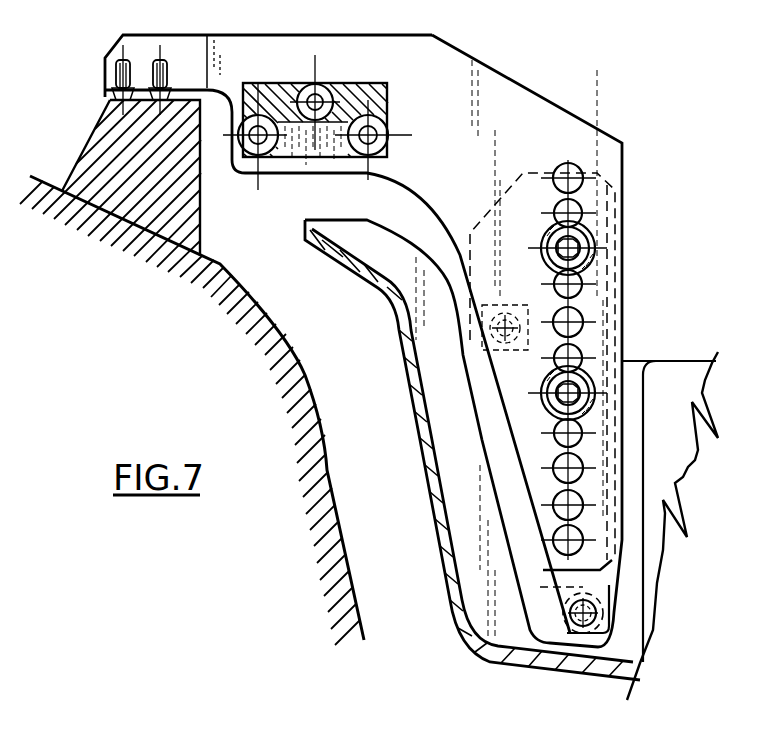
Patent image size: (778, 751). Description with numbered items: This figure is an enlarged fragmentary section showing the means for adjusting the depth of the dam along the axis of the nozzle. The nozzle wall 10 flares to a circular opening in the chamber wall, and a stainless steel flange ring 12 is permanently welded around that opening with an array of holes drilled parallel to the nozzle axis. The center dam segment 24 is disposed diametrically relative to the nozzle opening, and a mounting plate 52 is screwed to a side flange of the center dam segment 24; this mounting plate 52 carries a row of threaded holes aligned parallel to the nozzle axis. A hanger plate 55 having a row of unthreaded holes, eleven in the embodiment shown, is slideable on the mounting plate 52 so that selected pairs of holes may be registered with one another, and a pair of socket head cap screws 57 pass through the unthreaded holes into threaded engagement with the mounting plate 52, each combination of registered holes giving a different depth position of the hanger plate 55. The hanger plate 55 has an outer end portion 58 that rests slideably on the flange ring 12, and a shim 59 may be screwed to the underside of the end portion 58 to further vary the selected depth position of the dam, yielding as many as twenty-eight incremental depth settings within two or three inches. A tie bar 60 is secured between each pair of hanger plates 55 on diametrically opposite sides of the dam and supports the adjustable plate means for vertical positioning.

The nozzle wall 10 is at (322, 452).
The flange ring 12 is at (133, 200).
The center dam segment 24 is at (440, 540).
The mounting plate 52 is at (607, 583).
The hanger plate 55 is at (538, 103).
The socket head cap screws 57 is at (583, 392).
The outer end portion 58 is at (243, 47).
The shim 59 is at (110, 97).
The tie bar 60 is at (360, 87).